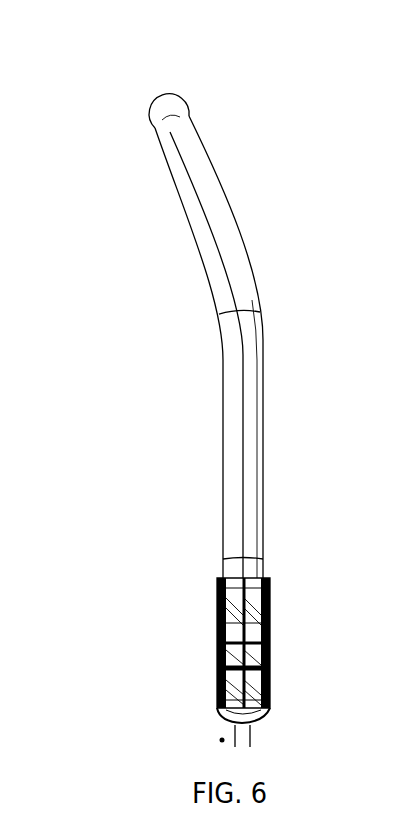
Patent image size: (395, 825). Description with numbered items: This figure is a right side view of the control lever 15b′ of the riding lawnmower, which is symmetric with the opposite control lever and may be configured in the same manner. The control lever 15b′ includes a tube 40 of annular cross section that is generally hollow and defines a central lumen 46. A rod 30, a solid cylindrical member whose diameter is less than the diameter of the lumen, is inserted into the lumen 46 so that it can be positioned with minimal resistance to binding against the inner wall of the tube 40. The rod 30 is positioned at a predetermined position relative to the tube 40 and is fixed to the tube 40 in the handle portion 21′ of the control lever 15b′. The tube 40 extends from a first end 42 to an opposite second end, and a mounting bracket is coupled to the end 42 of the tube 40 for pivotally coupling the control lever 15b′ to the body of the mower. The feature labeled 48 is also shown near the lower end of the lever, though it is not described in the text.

The control lever 15b′ is at (168, 402).
The handle portion 21′ is at (157, 98).
The rod 30 is at (175, 112).
The tube 40 is at (190, 217).
The central lumen 46 is at (235, 277).
The first end 42 is at (253, 640).
The proximal end fitting 48 is at (217, 678).